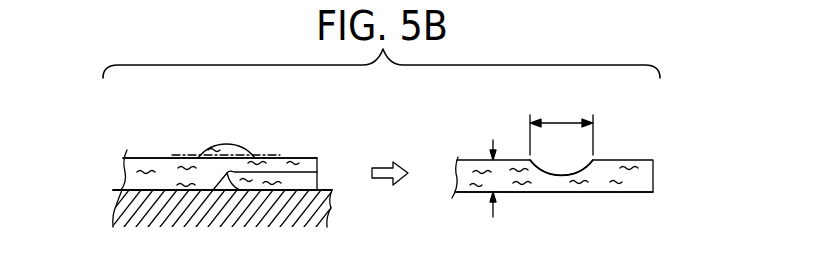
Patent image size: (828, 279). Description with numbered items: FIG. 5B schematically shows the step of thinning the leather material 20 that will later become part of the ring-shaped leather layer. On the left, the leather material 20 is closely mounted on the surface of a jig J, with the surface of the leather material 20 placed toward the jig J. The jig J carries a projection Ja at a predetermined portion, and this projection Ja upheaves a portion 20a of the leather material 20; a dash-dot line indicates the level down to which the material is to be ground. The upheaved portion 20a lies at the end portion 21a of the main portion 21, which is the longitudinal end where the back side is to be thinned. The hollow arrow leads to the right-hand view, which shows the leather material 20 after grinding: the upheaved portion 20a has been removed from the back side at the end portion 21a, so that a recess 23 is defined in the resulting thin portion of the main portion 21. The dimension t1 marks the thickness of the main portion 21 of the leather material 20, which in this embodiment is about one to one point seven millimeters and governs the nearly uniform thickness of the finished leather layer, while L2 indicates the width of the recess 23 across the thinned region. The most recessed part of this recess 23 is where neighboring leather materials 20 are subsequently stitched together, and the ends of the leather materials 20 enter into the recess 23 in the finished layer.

The leather material 20 is at (141, 158).
The main portion 21 is at (461, 155).
The portion upheaved by the projection 20a is at (225, 144).
The end portion of the main portion 21a is at (292, 158).
The projection Ja is at (312, 172).
The jig J is at (324, 220).
The thickness of the main portion t1 is at (505, 158).
The width of recess L2 is at (562, 118).
The recess 23 is at (562, 162).